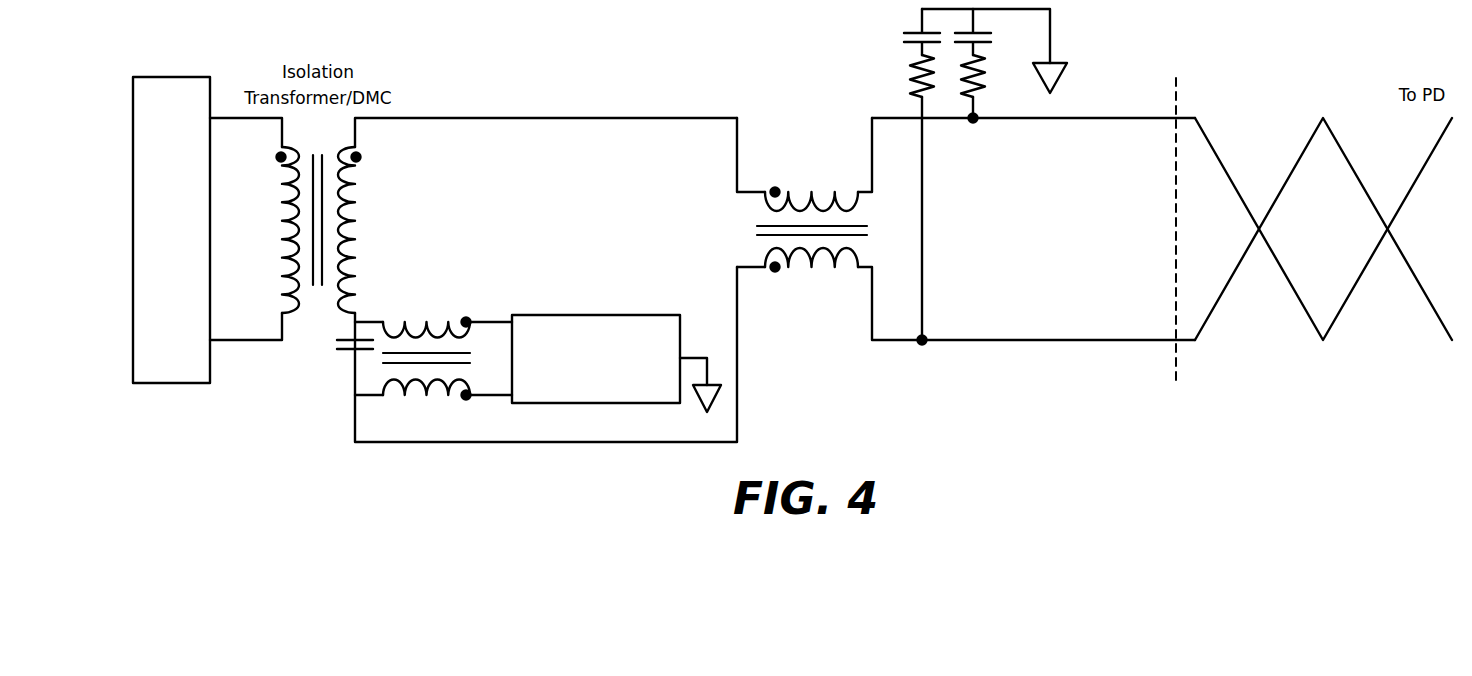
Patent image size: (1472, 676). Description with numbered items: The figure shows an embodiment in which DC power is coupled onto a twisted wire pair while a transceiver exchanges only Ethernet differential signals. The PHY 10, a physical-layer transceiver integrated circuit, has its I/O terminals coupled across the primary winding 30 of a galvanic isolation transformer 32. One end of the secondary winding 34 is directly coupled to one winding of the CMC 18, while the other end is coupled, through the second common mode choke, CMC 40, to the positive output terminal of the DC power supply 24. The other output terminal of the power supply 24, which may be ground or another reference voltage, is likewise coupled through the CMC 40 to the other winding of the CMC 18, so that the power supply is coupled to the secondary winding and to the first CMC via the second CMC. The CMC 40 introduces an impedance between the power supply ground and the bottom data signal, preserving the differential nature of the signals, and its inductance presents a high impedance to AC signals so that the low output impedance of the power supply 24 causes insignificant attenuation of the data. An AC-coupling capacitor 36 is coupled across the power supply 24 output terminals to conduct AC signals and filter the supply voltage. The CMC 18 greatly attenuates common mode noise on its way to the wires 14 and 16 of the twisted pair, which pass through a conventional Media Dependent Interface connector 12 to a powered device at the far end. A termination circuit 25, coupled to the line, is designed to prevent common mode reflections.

The PHY 10 is at (133, 188).
The Media Dependent Interface (MDI) connector 12 is at (1175, 100).
The wire 14 is at (1222, 165).
The wire 16 is at (1222, 295).
The CMC 18 is at (824, 192).
The DC power supply 24 is at (608, 315).
The termination circuit 25 is at (878, 34).
The primary winding 30 is at (282, 240).
The galvanic isolation transformer 32 is at (314, 342).
The secondary winding 34 is at (355, 238).
The AC-coupling capacitor 36 is at (348, 352).
The CMC 40 is at (440, 338).